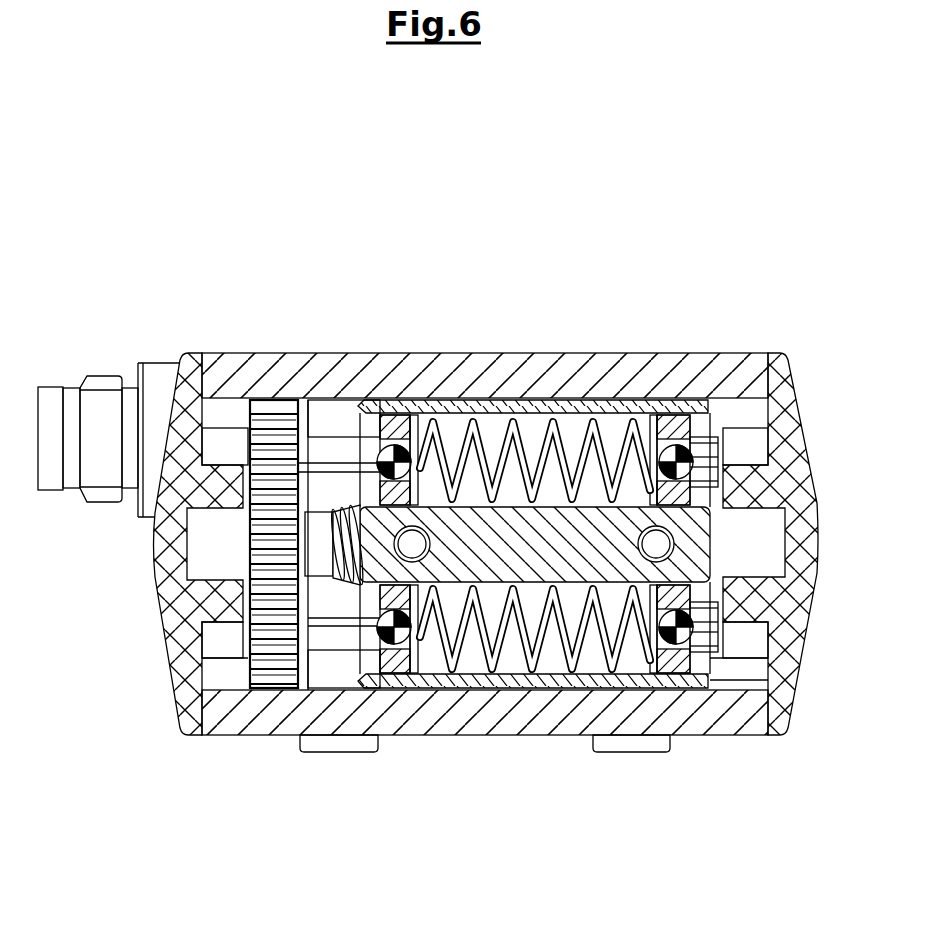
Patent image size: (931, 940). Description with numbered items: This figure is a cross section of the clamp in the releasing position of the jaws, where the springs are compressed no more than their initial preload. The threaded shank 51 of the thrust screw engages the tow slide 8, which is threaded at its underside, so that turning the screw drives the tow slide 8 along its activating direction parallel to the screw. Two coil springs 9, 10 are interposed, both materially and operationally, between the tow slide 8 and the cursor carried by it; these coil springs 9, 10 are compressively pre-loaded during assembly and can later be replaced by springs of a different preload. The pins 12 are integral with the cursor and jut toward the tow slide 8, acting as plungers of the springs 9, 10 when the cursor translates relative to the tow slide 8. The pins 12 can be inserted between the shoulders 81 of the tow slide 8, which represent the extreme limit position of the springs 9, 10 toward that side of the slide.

The tow slide 8 is at (592, 541).
The coil spring 9 is at (508, 432).
The coil spring 10 is at (527, 655).
The pins 12 is at (390, 450).
The threaded shank 51 is at (330, 562).
The shoulders 81 is at (328, 660).